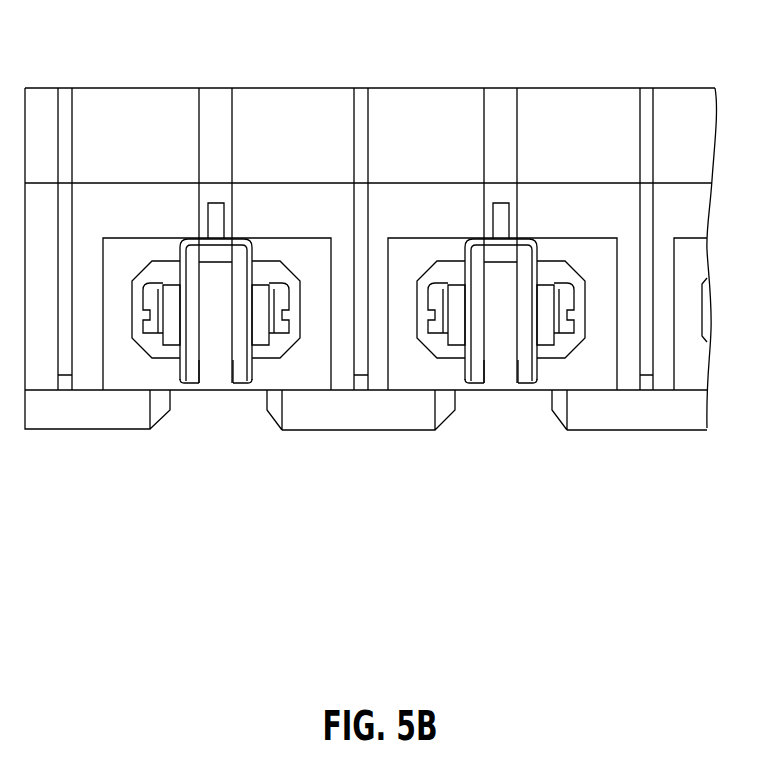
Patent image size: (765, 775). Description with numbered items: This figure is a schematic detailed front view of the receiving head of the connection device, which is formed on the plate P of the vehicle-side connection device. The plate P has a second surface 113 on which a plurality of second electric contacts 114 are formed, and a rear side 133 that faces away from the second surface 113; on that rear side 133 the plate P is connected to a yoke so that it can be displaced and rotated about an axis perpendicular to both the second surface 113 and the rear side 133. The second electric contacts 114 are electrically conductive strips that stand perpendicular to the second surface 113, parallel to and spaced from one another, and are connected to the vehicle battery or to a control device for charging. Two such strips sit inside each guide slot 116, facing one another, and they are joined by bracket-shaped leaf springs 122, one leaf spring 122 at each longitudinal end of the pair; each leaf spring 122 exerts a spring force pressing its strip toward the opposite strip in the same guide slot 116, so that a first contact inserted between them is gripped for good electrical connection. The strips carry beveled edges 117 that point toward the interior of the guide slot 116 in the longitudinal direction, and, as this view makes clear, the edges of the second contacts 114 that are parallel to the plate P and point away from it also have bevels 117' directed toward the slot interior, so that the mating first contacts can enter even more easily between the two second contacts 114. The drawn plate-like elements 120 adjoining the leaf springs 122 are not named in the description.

The second surface 113 is at (108, 186).
The plate P is at (157, 113).
The rear side 133 is at (312, 88).
The leaf spring 122 is at (248, 240).
The contact plate 120 is at (154, 300).
The second electric contact 114 is at (184, 356).
The beveled edge 117 is at (356, 409).
The bevel 117' is at (351, 437).
The guide slot 116 is at (219, 383).